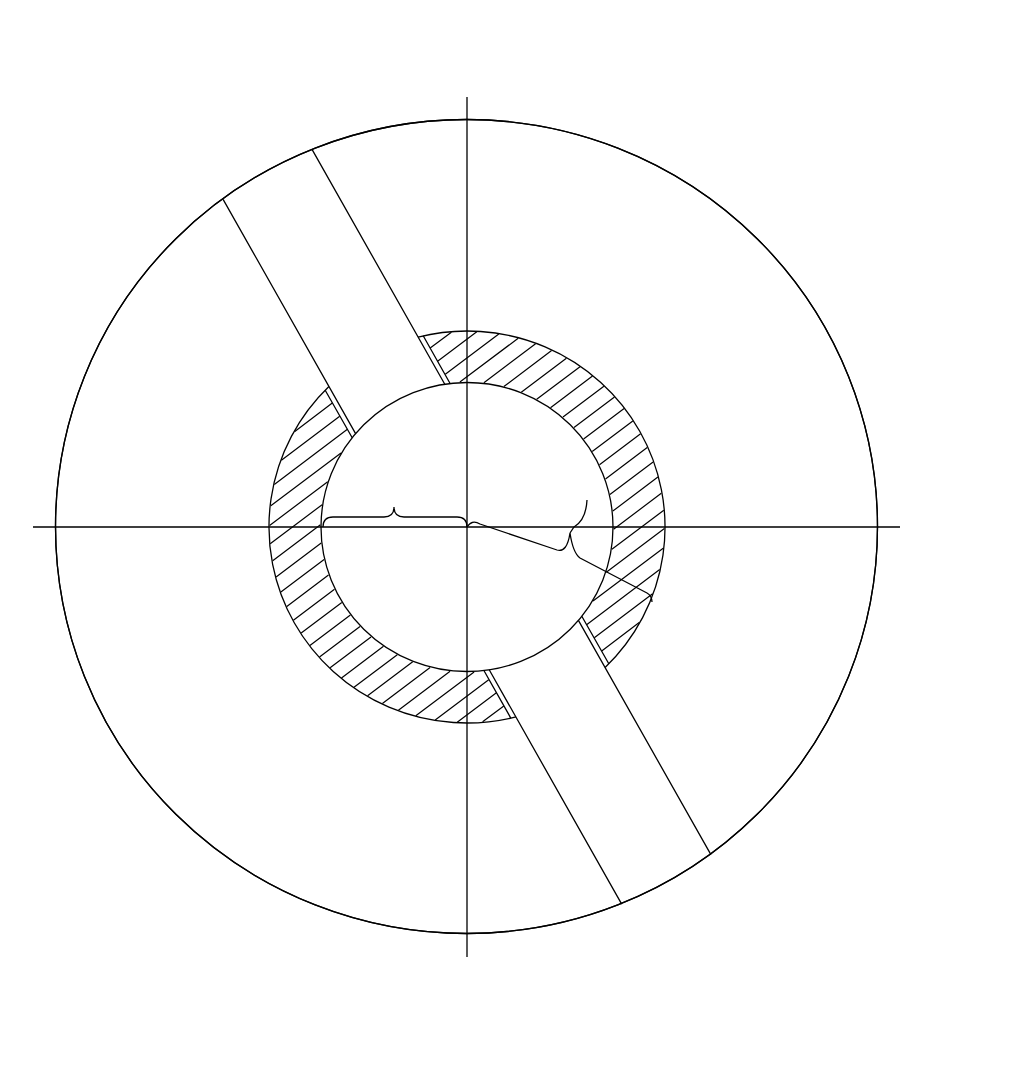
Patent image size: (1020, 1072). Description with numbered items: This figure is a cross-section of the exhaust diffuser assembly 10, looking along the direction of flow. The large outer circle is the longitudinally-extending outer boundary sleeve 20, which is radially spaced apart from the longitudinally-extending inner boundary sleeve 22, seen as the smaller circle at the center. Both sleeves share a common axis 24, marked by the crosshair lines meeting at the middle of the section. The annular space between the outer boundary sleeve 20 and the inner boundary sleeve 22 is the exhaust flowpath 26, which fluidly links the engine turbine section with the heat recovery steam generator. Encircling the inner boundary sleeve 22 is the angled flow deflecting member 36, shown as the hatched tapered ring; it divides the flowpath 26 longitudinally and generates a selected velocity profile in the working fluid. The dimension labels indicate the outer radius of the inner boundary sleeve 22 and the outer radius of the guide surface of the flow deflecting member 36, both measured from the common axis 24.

The exhaust diffuser assembly 10 is at (534, 88).
The outer boundary sleeve 20 is at (634, 152).
The inner boundary sleeve 22 is at (565, 420).
The common axis 24 is at (467, 530).
The exhaust flowpath 26 is at (273, 872).
The flow deflecting member 36 is at (548, 345).